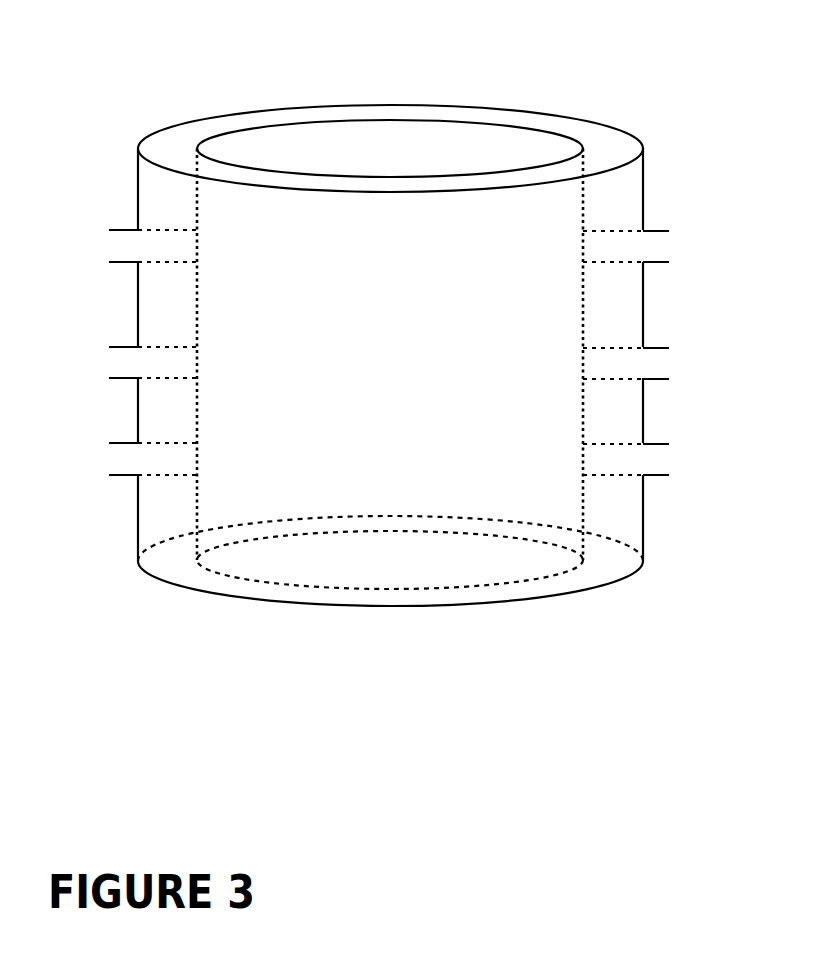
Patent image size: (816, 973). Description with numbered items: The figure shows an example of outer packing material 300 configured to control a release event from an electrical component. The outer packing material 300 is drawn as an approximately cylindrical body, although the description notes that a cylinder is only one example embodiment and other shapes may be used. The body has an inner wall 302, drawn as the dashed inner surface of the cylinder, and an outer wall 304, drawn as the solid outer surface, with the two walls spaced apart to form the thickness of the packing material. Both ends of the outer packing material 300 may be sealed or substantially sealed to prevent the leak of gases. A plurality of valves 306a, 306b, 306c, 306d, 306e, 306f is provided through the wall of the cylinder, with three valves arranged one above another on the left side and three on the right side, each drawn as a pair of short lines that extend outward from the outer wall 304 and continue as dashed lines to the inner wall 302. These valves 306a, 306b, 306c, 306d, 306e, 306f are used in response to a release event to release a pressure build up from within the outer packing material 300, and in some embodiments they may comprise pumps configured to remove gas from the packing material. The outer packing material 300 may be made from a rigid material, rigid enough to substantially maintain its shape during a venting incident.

The outer packing material 300 is at (88, 57).
The inner wall 302 is at (380, 119).
The outer wall 304 is at (503, 109).
The valve 306a is at (110, 230).
The valve 306b is at (110, 347).
The valve 306c is at (110, 443).
The valve 306d is at (669, 231).
The valve 306e is at (669, 348).
The valve 306f is at (669, 444).